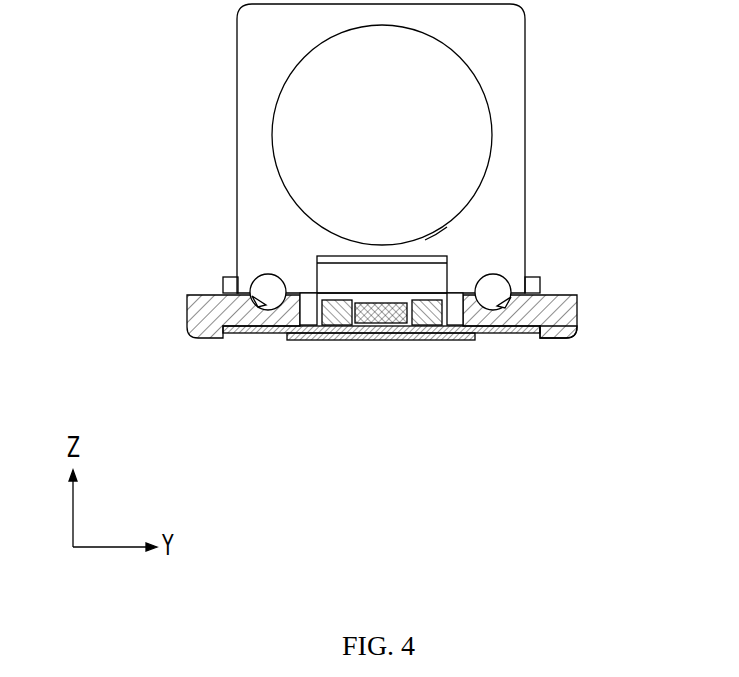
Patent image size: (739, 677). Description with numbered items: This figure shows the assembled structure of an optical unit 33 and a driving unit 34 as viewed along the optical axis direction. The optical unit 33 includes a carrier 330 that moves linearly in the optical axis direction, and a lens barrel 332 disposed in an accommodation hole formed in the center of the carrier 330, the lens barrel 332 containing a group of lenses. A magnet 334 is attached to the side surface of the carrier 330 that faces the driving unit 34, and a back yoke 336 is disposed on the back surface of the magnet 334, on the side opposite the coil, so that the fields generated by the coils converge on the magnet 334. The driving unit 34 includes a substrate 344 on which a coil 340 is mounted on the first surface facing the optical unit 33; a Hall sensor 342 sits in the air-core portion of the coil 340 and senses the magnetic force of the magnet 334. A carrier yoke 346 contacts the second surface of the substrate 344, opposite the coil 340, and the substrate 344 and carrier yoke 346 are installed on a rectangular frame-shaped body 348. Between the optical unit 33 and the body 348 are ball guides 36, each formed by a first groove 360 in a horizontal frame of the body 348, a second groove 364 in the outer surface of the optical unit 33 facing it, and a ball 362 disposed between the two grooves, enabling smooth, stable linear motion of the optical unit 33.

The optical unit 33 is at (379, 183).
The carrier 330 is at (277, 50).
The lens barrel 332 is at (302, 133).
The magnet 334 is at (440, 262).
The back yoke 336 is at (432, 238).
The ball guide 36 is at (356, 295).
The first groove 360 is at (262, 303).
The ball 362 is at (252, 302).
The second groove 364 is at (256, 283).
The driving unit 34 is at (410, 386).
The coil 340 is at (335, 315).
The Hall sensor 342 is at (383, 312).
The substrate 344 is at (508, 333).
The carrier yoke 346 is at (423, 338).
The frame-shaped body 348 is at (564, 373).